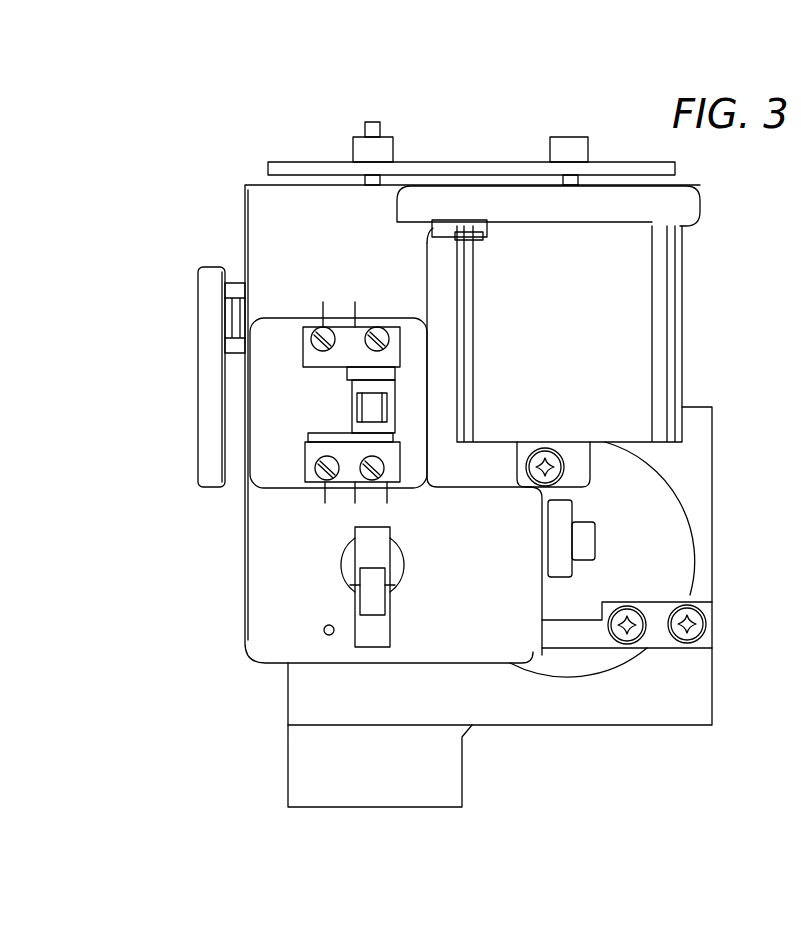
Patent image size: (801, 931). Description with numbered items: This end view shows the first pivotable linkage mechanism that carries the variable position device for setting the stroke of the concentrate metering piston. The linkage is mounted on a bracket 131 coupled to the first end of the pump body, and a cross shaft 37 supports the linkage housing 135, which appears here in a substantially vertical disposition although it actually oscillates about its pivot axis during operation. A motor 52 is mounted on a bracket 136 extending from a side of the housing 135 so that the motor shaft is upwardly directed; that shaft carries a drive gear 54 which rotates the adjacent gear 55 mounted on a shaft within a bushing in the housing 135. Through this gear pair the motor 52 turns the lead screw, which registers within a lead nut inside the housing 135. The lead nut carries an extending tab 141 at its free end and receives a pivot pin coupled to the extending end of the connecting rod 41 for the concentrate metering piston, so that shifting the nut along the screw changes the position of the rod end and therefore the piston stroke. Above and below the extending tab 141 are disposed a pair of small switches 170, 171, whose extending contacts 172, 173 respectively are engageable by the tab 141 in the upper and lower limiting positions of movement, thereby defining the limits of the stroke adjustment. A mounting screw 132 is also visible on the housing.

The linkage housing 135 is at (248, 186).
The drive gear 55 is at (448, 162).
The drive gear 54 is at (627, 163).
The bracket 136 is at (685, 207).
The motor 52 is at (683, 327).
The screw 132 is at (585, 462).
The bracket 131 is at (200, 422).
The cross shaft 37 is at (238, 288).
The switch 170 is at (305, 340).
The extending contact 172 is at (345, 380).
The extending tab 141 is at (350, 408).
The extending contact 173 is at (353, 433).
The switch 171 is at (310, 453).
The connecting rod 41 is at (372, 593).